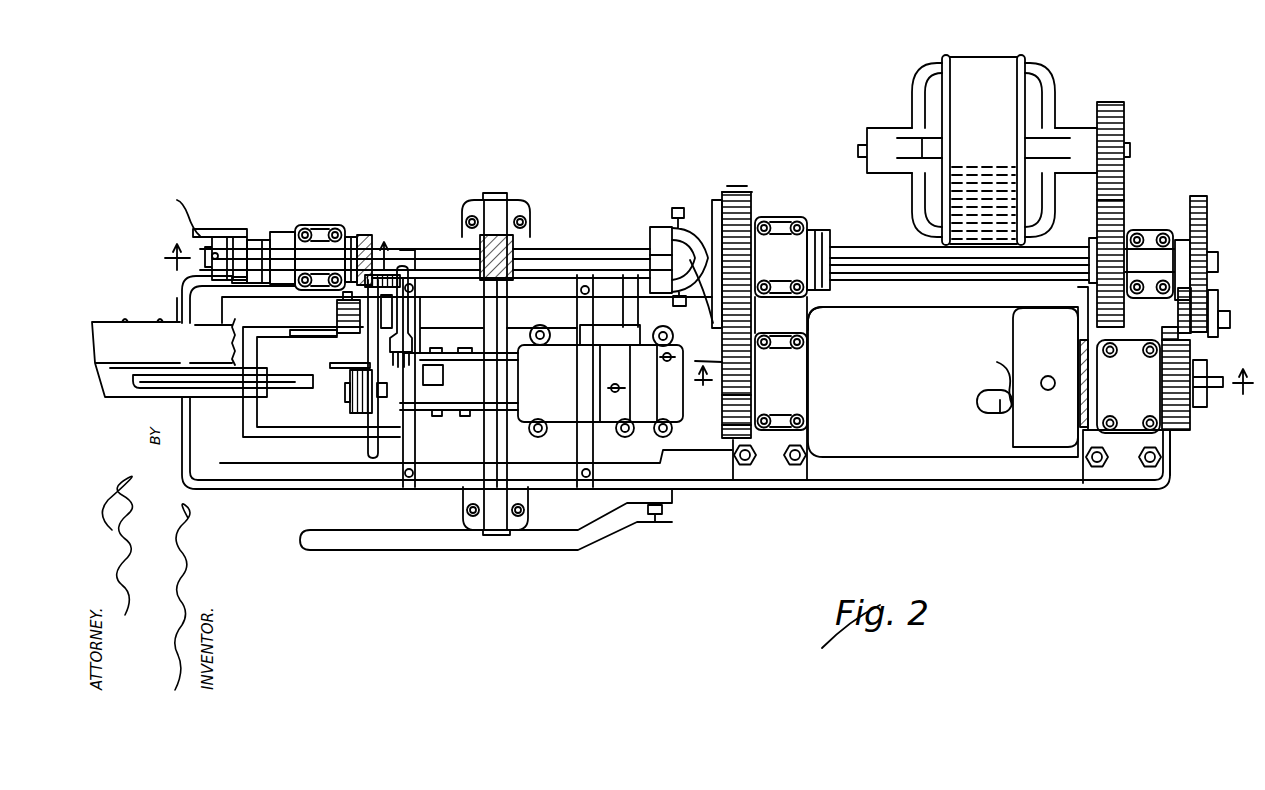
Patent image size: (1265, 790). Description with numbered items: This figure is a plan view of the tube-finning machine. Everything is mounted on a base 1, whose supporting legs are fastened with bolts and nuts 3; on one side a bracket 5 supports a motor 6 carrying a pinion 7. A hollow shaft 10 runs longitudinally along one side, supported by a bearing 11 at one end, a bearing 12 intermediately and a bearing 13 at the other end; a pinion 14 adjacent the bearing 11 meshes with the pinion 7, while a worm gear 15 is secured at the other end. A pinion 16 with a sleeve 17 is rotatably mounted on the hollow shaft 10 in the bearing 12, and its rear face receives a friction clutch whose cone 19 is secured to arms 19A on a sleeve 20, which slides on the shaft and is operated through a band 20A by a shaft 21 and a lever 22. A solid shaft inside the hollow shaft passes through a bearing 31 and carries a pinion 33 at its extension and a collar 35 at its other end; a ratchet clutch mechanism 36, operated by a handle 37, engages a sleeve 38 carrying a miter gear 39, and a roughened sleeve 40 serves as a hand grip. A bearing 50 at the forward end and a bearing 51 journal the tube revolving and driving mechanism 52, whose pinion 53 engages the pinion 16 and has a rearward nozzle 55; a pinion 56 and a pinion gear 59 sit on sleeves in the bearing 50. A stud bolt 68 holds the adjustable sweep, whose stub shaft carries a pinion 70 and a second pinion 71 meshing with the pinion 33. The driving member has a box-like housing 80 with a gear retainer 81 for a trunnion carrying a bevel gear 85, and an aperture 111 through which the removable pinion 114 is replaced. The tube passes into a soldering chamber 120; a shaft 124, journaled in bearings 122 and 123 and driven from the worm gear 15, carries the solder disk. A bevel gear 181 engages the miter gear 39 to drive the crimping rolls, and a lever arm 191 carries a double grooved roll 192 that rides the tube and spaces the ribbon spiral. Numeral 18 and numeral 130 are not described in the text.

The base 1 is at (1055, 473).
The bolts 3 is at (1100, 468).
The bracket 5 is at (974, 374).
The motor 6 is at (1003, 70).
The pinion 7 is at (1125, 116).
The hollow shaft 10 is at (867, 250).
The bearing 11 is at (1147, 250).
The bearing 12 is at (777, 243).
The bearing 13 is at (279, 254).
The pinion 14 is at (1123, 213).
The worm gear 15 is at (537, 238).
The pinion 16 is at (750, 192).
The sleeve 17 is at (810, 230).
The bracket 18 is at (470, 234).
The cone 19 is at (720, 193).
The arms 19A is at (713, 233).
The sleeve 20 is at (657, 245).
The band 20A is at (663, 227).
The shaft 21 is at (657, 516).
The lever 22 is at (600, 523).
The bearing 31 is at (327, 223).
The pinion 33 is at (1207, 225).
The collar 35 is at (175, 209).
The ratchet clutch mechanism 36 is at (257, 243).
The handle 37 is at (218, 235).
The sleeve 38 is at (350, 235).
The miter gear 39 is at (363, 238).
The sleeve 40 is at (283, 237).
The bearing 50 is at (1128, 386).
The bearing 51 is at (770, 388).
The tube revolving and driving mechanism 52 is at (943, 382).
The pinion 53 is at (722, 427).
The nozzle 55 is at (722, 399).
The pinion 56 is at (1188, 430).
The pinion gear 59 is at (1170, 460).
The stud bolt 68 is at (1230, 319).
The pinion 70 is at (1203, 297).
The second pinion 71 is at (1218, 313).
The housing 80 is at (838, 318).
The gear retainer 81 is at (1045, 377).
The bevel gear 85 is at (1010, 365).
The aperture 111 is at (978, 400).
The removable pinion 114 is at (1003, 403).
The soldering chamber 120 is at (541, 381).
The bearing 122 is at (513, 200).
The bearing 123 is at (493, 513).
The shaft 124 is at (490, 312).
The bevel gear 130 is at (413, 257).
The bevel gear 181 is at (402, 235).
The lever arm 191 is at (368, 445).
The double grooved roll 192 is at (350, 407).